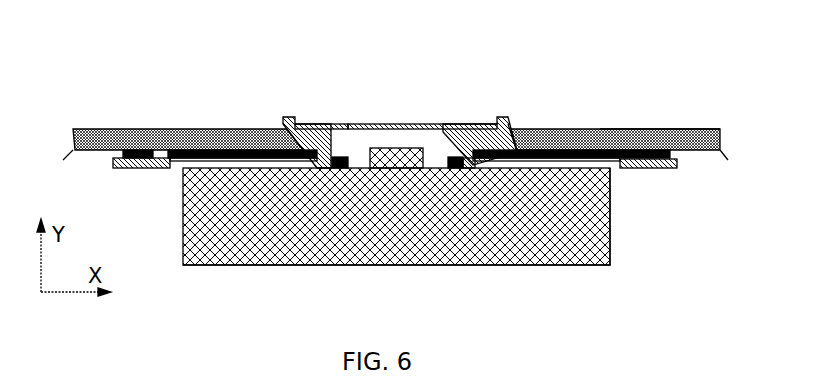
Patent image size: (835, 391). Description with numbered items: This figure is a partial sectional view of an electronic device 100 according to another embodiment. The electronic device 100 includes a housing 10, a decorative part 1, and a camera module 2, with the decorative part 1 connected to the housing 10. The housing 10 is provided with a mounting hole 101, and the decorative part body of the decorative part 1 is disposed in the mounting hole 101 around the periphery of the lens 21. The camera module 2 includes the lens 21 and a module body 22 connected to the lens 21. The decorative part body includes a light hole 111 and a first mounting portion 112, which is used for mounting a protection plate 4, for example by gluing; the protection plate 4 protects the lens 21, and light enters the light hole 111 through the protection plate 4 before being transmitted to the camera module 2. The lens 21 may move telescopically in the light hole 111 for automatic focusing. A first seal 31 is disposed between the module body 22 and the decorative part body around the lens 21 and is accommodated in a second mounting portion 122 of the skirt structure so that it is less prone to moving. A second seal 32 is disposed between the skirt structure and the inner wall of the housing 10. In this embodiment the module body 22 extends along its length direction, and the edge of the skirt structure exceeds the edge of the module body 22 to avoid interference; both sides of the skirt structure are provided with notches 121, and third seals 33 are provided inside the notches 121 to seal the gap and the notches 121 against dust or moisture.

The electronic device 100 is at (452, 31).
The housing 10 is at (215, 129).
The third seal 33 is at (643, 129).
The second mounting portion 122 is at (332, 124).
The first mounting portion 112 is at (498, 124).
The mounting hole 101 is at (517, 126).
The protection plate 4 is at (348, 124).
The light hole 111 is at (377, 124).
The decorative part 1 is at (113, 168).
The notch 121 is at (172, 168).
The second seal 32 is at (115, 168).
The first seal 31 is at (448, 157).
The camera module 2 is at (183, 215).
The lens 21 is at (414, 148).
The module body 22 is at (610, 222).